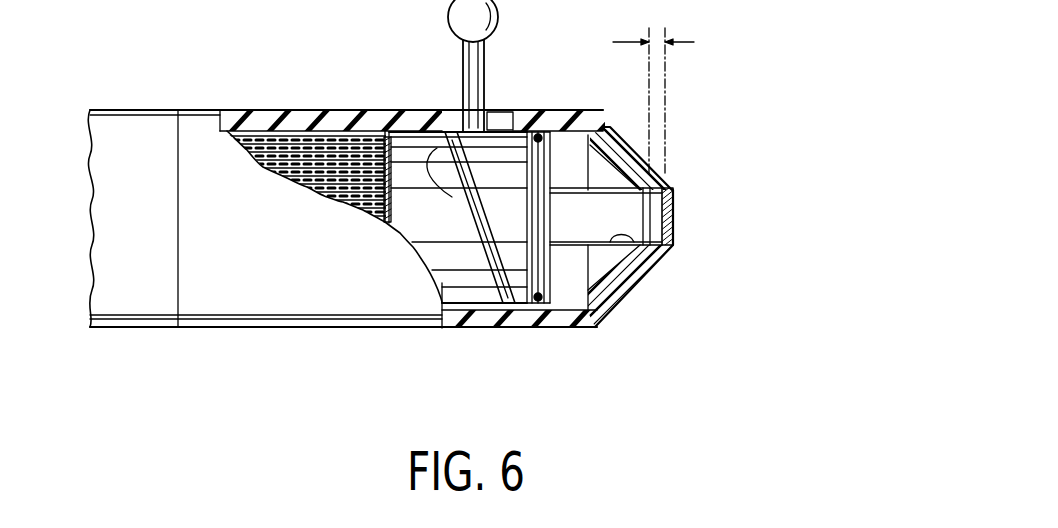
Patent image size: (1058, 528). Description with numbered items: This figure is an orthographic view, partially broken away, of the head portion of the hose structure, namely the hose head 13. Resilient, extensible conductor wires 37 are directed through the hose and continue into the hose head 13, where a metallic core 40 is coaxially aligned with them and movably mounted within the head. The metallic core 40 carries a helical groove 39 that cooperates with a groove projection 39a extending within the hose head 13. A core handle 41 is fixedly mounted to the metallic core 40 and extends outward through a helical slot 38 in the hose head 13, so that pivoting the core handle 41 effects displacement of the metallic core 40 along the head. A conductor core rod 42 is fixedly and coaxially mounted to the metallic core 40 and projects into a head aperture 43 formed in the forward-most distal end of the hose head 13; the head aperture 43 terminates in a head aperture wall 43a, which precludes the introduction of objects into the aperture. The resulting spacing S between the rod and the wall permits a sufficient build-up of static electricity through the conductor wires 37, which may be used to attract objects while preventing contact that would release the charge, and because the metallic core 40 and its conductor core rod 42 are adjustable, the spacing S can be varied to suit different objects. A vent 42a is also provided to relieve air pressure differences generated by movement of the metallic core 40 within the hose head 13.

The hose head 13 is at (205, 140).
The extensible conductor wires 37 is at (293, 137).
The helical slot 38 is at (503, 113).
The helical groove 39 is at (477, 232).
The groove projection 39a is at (424, 185).
The metallic core 40 is at (485, 305).
The core handle 41 is at (457, 86).
The conductor core rod 42 is at (613, 303).
The vent 42a is at (612, 128).
The head aperture 43 is at (652, 252).
The head aperture wall 43a is at (678, 217).
The spacing S is at (666, 100).